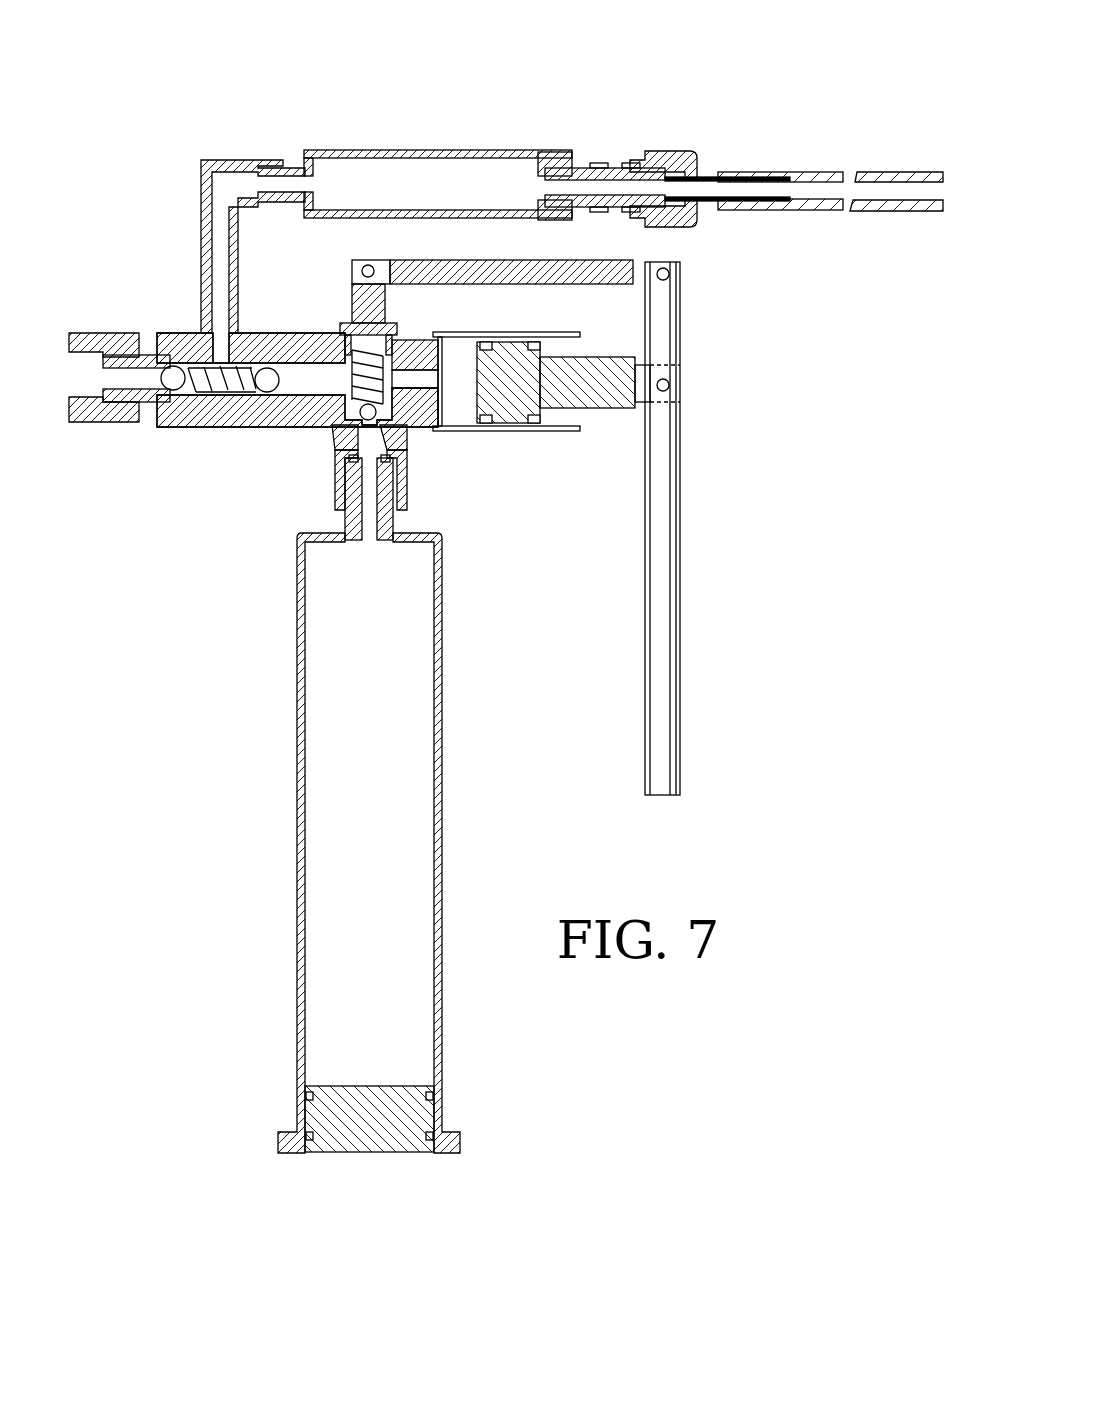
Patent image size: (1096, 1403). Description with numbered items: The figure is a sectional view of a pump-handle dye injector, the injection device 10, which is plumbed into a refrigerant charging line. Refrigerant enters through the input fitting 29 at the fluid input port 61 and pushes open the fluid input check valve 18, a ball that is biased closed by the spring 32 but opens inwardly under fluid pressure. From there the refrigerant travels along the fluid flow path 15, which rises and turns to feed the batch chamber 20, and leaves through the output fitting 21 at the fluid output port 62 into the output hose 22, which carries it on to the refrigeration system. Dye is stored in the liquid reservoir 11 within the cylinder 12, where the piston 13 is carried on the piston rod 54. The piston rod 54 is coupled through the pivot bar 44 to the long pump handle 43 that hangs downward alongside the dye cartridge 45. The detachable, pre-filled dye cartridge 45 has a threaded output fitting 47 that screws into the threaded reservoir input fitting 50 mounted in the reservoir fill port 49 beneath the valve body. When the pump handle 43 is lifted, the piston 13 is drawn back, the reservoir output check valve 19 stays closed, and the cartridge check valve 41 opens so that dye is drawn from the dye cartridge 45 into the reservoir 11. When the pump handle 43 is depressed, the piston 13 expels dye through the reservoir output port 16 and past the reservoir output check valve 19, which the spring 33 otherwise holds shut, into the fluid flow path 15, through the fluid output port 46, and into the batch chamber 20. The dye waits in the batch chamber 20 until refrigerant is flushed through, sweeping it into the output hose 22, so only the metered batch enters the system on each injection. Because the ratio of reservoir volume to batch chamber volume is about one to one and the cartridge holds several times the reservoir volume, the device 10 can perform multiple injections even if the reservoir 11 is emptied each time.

The injection device 10 is at (632, 74).
The liquid reservoir 11 is at (460, 392).
The cylinder 12 is at (460, 335).
The piston 13 is at (505, 350).
The fluid flow path 15 is at (230, 272).
The reservoir output port 16 is at (417, 396).
The fluid input check valve 18 is at (175, 391).
The reservoir output check valve 19 is at (262, 393).
The batch chamber 20 is at (405, 178).
The output fitting 21 is at (600, 166).
The output hose 22 is at (893, 211).
The input fitting 29 is at (85, 333).
The spring 32 is at (185, 352).
The spring 33 is at (297, 380).
The cartridge check valve 41 is at (345, 350).
The pump handle 43 is at (660, 675).
The pivot bar 44 is at (600, 262).
The dye cartridge 45 is at (443, 860).
The fluid output port 46 is at (231, 180).
The output fitting 47 is at (400, 514).
The reservoir fill port 49 is at (334, 436).
The reservoir input fitting 50 is at (336, 485).
The piston rod 54 is at (558, 410).
The fluid input port 61 is at (72, 378).
The fluid output port 62 is at (678, 150).